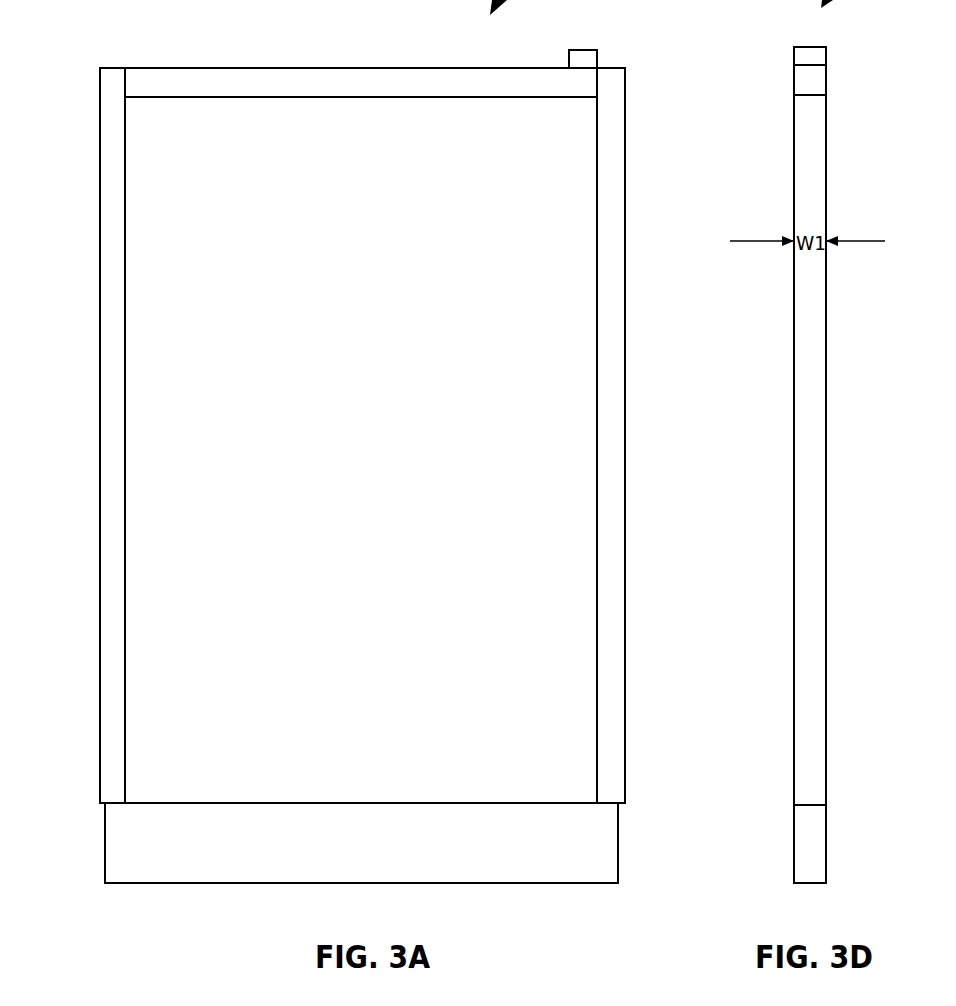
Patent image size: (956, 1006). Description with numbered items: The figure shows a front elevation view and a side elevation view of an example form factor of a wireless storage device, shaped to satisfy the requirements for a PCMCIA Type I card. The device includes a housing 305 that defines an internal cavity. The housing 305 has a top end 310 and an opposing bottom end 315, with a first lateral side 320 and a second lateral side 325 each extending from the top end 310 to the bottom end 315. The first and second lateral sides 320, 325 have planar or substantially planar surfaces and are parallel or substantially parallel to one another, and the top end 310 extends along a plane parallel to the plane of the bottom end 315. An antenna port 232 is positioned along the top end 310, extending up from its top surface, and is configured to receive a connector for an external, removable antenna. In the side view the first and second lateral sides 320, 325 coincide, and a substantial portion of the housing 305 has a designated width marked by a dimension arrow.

In FIG. 3A, the antenna port 232 is at (588, 50).
In FIG. 3D, the antenna port 232 is at (826, 50).
In FIG. 3A, the housing 305 is at (373, 356).
In FIG. 3A, the top end 310 is at (458, 68).
In FIG. 3D, the top end 310 is at (794, 65).
In FIG. 3A, the bottom end 315 is at (362, 885).
In FIG. 3A, the first lateral side 320 is at (100, 436).
In FIG. 3D, the first lateral side 320 is at (810, 472).
In FIG. 3A, the second lateral side 325 is at (623, 432).
In FIG. 3D, the second lateral side 325 is at (763, 450).